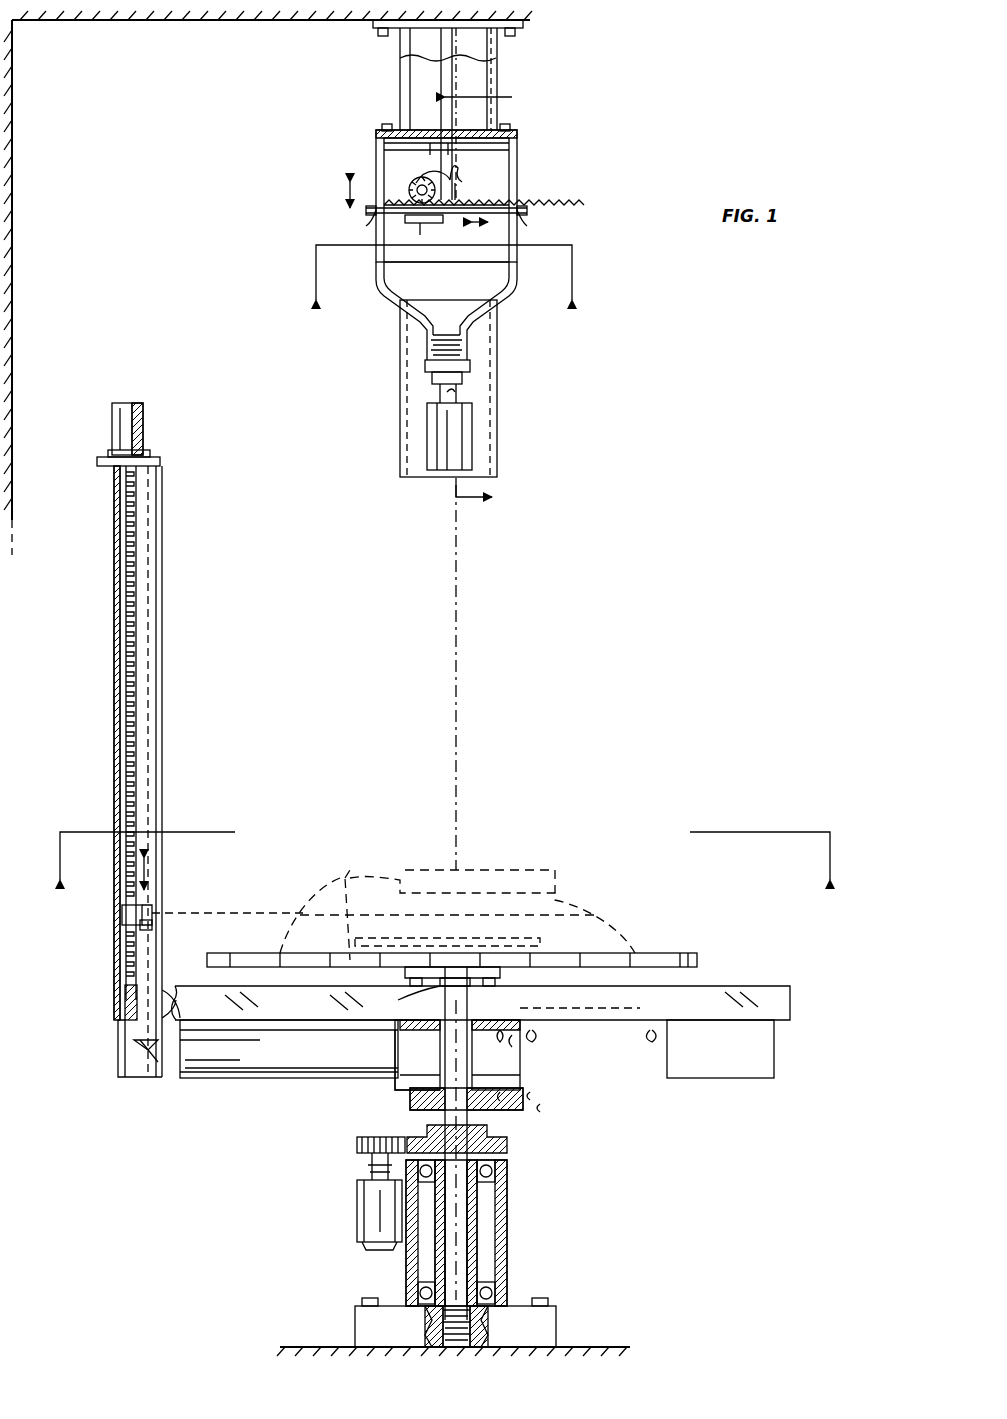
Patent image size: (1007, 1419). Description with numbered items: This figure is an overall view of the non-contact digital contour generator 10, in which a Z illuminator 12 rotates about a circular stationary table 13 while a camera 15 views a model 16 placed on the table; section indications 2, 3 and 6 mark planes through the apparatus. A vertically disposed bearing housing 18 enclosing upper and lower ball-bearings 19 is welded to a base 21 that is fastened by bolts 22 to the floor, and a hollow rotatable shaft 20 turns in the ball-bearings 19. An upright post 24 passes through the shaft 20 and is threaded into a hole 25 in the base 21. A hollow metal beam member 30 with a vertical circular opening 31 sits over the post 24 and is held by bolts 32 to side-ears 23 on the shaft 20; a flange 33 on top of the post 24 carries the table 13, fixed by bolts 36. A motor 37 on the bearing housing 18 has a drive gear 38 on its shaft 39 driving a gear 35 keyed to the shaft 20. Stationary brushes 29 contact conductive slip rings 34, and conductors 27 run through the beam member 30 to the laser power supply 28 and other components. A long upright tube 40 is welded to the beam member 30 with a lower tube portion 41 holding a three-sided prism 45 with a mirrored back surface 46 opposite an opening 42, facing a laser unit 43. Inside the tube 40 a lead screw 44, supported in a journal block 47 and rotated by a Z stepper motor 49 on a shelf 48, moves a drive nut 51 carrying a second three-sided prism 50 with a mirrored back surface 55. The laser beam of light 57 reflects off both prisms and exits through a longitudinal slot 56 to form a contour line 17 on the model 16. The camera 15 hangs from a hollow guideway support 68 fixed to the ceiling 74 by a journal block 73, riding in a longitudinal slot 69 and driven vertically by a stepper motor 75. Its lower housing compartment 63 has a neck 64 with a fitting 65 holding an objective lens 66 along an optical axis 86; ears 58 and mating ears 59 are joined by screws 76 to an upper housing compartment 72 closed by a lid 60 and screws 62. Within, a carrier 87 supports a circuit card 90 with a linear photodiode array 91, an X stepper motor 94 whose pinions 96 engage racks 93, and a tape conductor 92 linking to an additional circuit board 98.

The non-contact digital contour generator 10 is at (672, 535).
The Z illuminator 12 is at (200, 828).
The circular stationary table 13 is at (697, 955).
The camera 15 is at (540, 183).
The model 16 is at (590, 912).
The contour line 17 is at (340, 878).
The bearing housing 18 is at (507, 1220).
The ball-bearings 19 is at (495, 1170).
The hollow rotatable shaft 20 is at (477, 1195).
The base 21 is at (545, 1320).
The bolts 22 is at (392, 1282).
The side-ears 23 is at (520, 1040).
The upright post 24 is at (467, 1245).
The hole 25 is at (440, 1318).
The conductors 27 is at (600, 1012).
The laser power supply 28 is at (774, 1052).
The stationary brushes 29 is at (523, 1098).
The hollow metal beam member 30 is at (770, 1005).
The vertical circular opening 31 is at (500, 980).
The bolts 32 is at (420, 1040).
The flange 33 is at (420, 967).
The conductive slip rings 34 is at (505, 1050).
The gear 35 is at (507, 1140).
The bolts 36 is at (430, 990).
The motor 37 is at (357, 1215).
The drive gear 38 is at (378, 1137).
The shaft 39 is at (372, 1165).
The upright tube 40 is at (112, 722).
The lower tube portion 41 is at (118, 1055).
The opening 42 is at (180, 1040).
The laser unit 43 is at (235, 1078).
The lead screw 44 is at (136, 615).
The three-sided prism 45 is at (150, 1055).
The mirrored back surface 46 is at (140, 1050).
The journal block 47 is at (125, 990).
The shelf 48 is at (108, 466).
The Z stepper motor 49 is at (143, 423).
The three-sided prism 50 is at (152, 926).
The drive nut 51 is at (122, 912).
The mirrored back surface 55 is at (152, 910).
The longitudinal slot 56 is at (162, 700).
The laser beam of light 57 is at (238, 913).
The ears 58 is at (366, 226).
The mating ears 59 is at (366, 210).
The lid 60 is at (505, 128).
The screws 62 is at (384, 124).
The lower housing compartment 63 is at (500, 290).
The neck 64 is at (427, 342).
The fitting 65 is at (430, 360).
The objective lens 66 is at (462, 390).
The hollow guideway support 68 is at (512, 360).
The longitudinal slot 69 is at (410, 72).
The upper housing compartment 72 is at (509, 148).
The journal block 73 is at (378, 34).
The ceiling 74 is at (535, 22).
The stepper motor 75 is at (462, 438).
The screws 76 is at (509, 198).
The optical axis 86 is at (456, 555).
The carrier 87 is at (395, 245).
The circuit card 90 is at (443, 220).
The linear photodiode array 91 is at (420, 235).
The tape conductor 92 is at (441, 150).
The racks 93 is at (462, 195).
The X stepper motor 94 is at (425, 178).
The pinions 96 is at (417, 188).
The additional circuit board 98 is at (509, 158).
The section line 2 is at (485, 299).
The section line 3 is at (444, 844).
The section line 6 is at (441, 274).